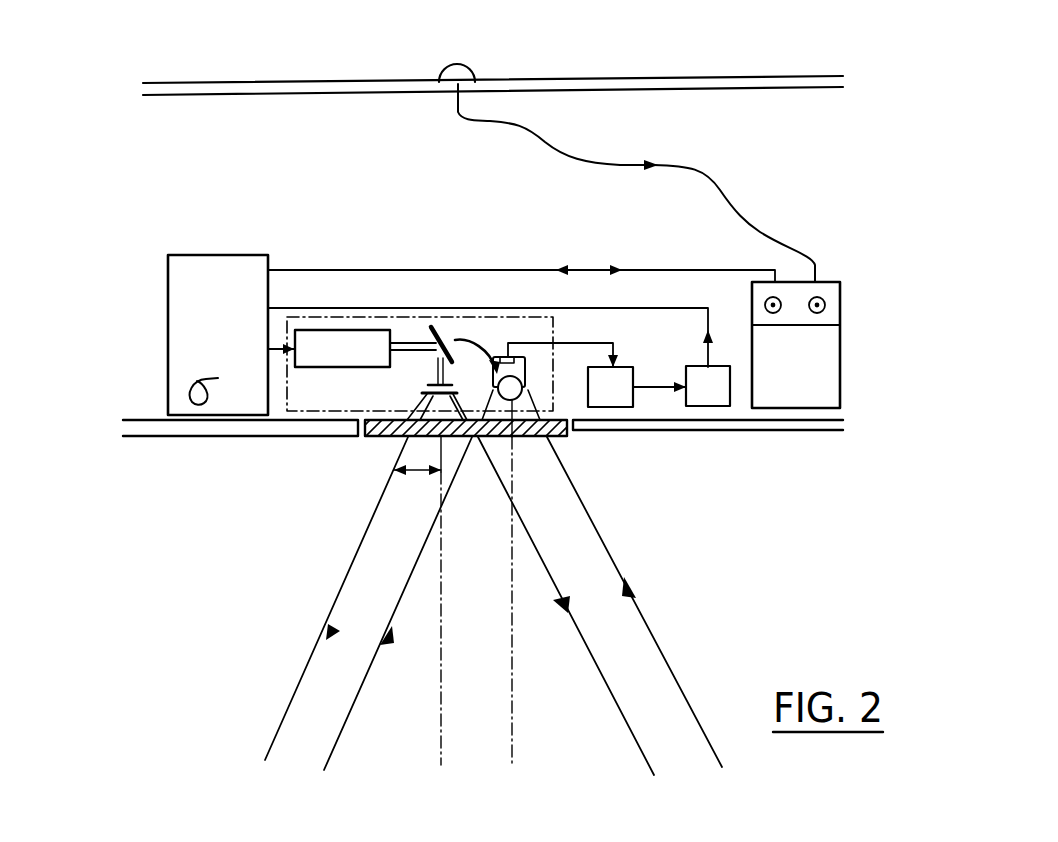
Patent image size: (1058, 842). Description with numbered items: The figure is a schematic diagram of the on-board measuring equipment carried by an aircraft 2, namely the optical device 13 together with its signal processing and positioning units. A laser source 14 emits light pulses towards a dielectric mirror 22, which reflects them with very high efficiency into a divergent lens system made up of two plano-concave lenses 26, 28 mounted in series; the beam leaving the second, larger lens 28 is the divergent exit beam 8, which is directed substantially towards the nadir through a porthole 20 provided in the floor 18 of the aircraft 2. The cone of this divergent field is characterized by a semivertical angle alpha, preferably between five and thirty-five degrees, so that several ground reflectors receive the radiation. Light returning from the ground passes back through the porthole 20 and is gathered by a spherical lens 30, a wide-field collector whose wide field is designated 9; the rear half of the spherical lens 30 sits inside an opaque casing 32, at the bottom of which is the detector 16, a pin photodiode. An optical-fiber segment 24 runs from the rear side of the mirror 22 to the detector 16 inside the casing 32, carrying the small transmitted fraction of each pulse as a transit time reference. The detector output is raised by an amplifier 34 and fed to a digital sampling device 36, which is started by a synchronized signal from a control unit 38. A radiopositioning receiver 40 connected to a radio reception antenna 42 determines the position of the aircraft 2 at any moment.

The aircraft 2 is at (785, 136).
The divergent exit beam 8 is at (356, 598).
The wide field 9 is at (637, 630).
The optical device 13 is at (297, 404).
The laser source 14 is at (332, 342).
The detector 16 is at (498, 355).
The floor 18 is at (743, 423).
The porthole 20 is at (500, 440).
The dielectric mirror 22 is at (445, 336).
The optical-fiber segment 24 is at (470, 343).
The first plano-concave lens 26 is at (430, 380).
The second plano-concave lens 28 is at (393, 441).
The spherical lens 30 is at (522, 380).
The opaque casing 32 is at (528, 362).
The amplifier 34 is at (605, 398).
The digital sampling device 36 is at (700, 396).
The control unit 38 is at (213, 270).
The radiopositioning receiver 40 is at (823, 358).
The radio reception antenna 42 is at (470, 64).
The semivertical angle alpha is at (417, 485).